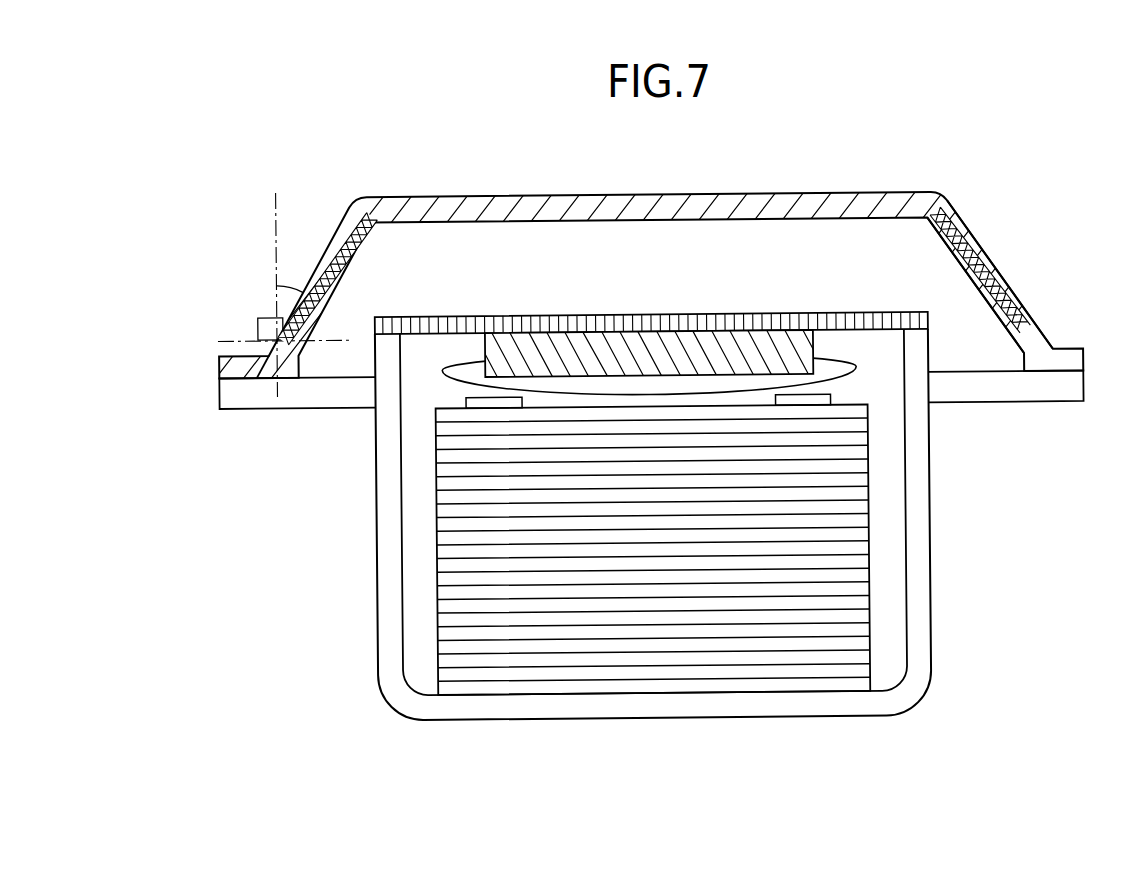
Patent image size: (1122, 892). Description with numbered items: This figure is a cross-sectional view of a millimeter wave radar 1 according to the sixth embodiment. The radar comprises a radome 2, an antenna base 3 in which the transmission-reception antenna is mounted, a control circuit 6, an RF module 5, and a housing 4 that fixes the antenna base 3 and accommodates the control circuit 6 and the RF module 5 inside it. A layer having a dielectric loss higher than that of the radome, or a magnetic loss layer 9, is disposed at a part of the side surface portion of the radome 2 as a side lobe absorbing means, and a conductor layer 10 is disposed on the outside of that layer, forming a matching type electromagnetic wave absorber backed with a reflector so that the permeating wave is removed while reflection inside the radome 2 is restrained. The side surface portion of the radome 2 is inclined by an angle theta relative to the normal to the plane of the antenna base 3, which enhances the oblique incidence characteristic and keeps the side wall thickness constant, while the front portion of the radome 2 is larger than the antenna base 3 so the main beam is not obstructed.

The battery 1 is at (193, 173).
The radome 2 is at (517, 194).
The antenna base 3 is at (808, 322).
The housing 4 is at (920, 540).
The RF module 5 is at (724, 350).
The control circuit 6 is at (661, 662).
The magnetic loss layer 9 is at (965, 225).
The conductor layer 10 is at (1000, 275).